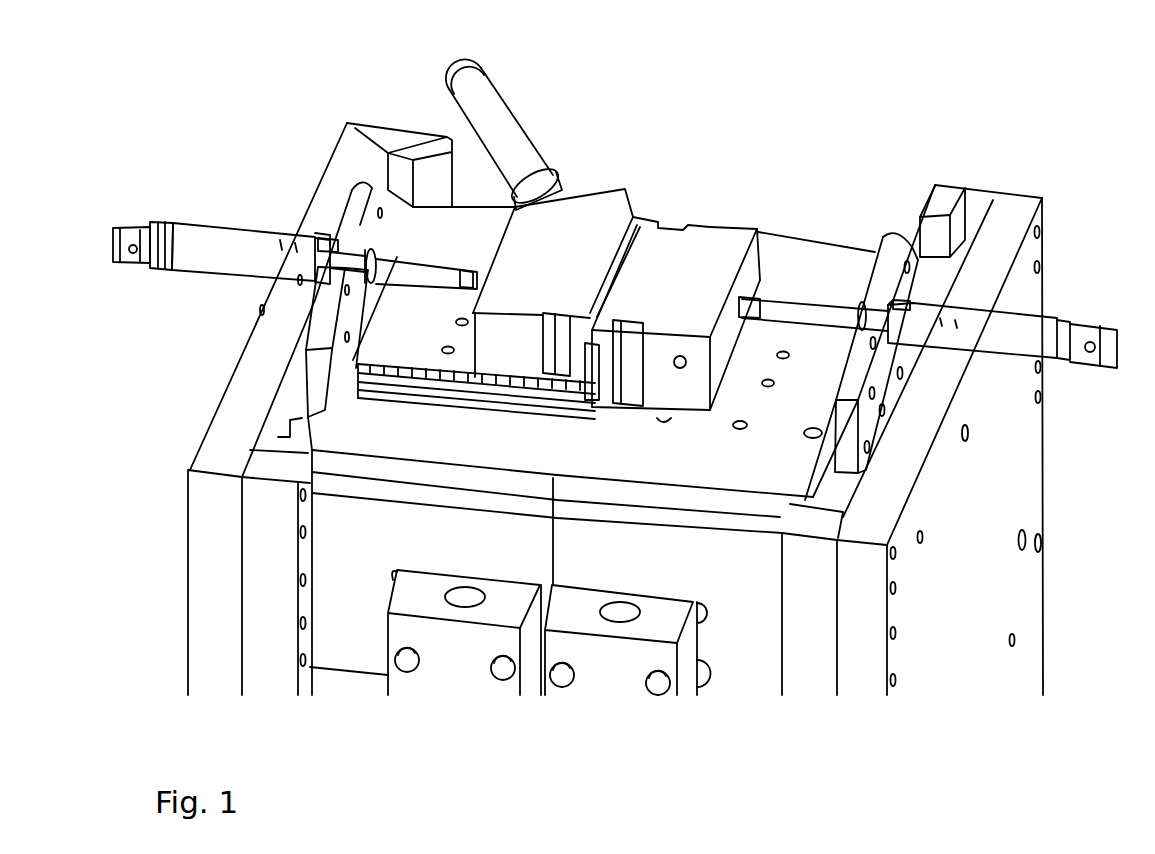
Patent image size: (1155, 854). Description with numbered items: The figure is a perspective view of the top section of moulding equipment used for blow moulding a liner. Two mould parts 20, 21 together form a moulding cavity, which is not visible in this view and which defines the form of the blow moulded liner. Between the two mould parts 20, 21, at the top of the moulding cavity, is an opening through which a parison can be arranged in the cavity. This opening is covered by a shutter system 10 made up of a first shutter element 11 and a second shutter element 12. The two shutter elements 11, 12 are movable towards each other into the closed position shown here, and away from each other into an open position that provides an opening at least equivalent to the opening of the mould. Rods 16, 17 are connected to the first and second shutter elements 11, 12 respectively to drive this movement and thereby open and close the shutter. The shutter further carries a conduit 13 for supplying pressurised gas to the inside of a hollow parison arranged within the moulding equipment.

The shutter system 10 is at (707, 174).
The first shutter element 11 is at (697, 260).
The second shutter element 12 is at (563, 240).
The conduit 13 is at (507, 130).
The rod 16 is at (790, 305).
The rod 17 is at (410, 275).
The mould part 20 is at (963, 607).
The mould part 21 is at (208, 583).